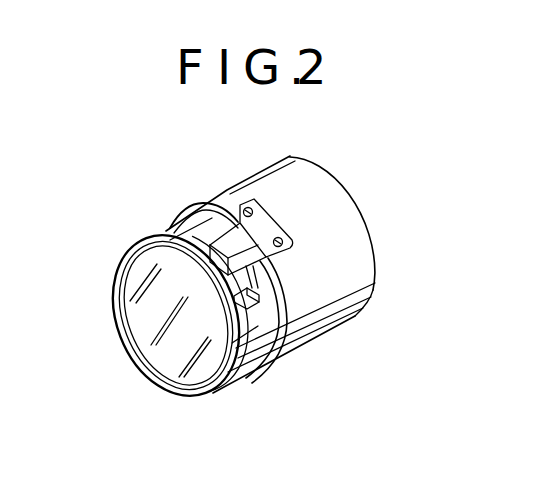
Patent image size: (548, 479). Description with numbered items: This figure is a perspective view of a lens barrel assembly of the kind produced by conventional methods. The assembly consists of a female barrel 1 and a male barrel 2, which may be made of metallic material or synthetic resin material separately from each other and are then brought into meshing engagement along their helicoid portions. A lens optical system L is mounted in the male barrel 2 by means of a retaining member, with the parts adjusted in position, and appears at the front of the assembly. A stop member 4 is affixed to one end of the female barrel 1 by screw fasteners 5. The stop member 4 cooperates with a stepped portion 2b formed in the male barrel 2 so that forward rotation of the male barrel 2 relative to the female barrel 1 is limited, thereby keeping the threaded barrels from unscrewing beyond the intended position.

The female barrel 1 is at (316, 163).
The male barrel 2 is at (158, 233).
The stepped portion 2b is at (262, 352).
The stop member 4 is at (222, 248).
The screw fasteners 5 is at (245, 208).
The lens optical system L is at (144, 303).